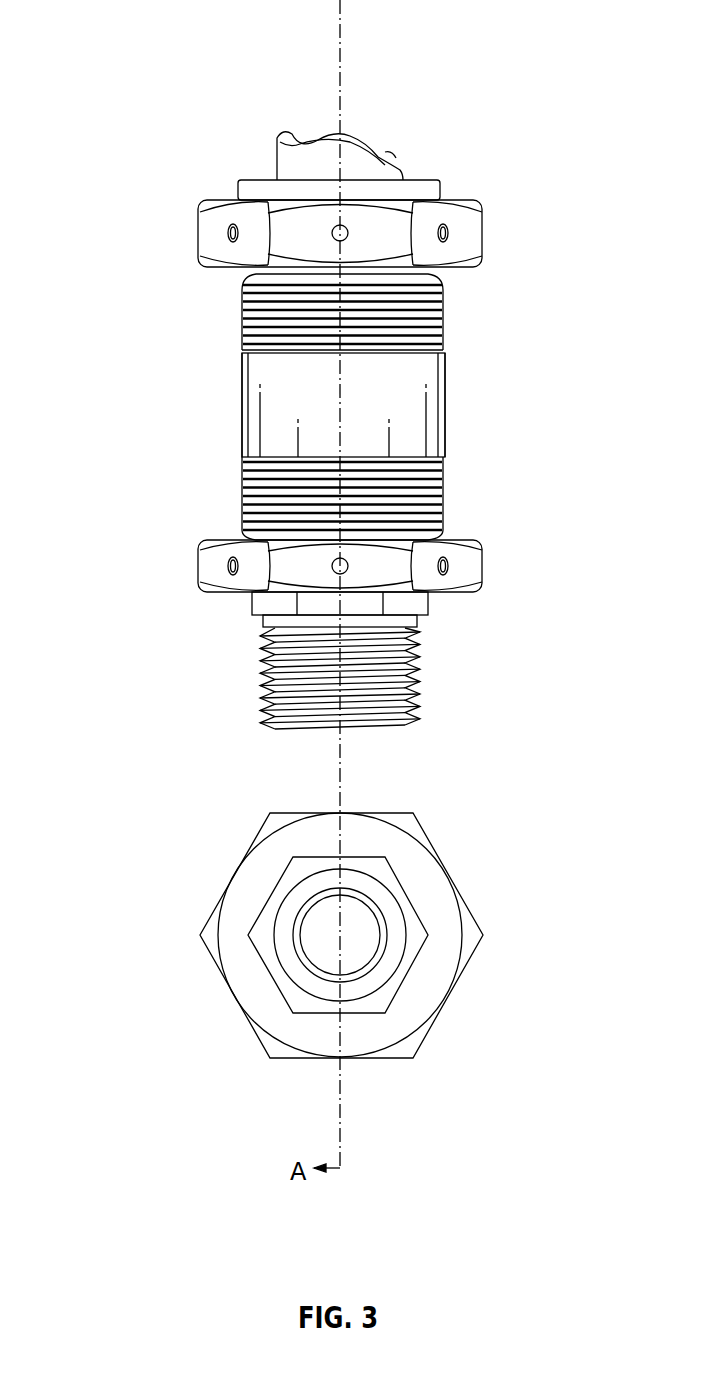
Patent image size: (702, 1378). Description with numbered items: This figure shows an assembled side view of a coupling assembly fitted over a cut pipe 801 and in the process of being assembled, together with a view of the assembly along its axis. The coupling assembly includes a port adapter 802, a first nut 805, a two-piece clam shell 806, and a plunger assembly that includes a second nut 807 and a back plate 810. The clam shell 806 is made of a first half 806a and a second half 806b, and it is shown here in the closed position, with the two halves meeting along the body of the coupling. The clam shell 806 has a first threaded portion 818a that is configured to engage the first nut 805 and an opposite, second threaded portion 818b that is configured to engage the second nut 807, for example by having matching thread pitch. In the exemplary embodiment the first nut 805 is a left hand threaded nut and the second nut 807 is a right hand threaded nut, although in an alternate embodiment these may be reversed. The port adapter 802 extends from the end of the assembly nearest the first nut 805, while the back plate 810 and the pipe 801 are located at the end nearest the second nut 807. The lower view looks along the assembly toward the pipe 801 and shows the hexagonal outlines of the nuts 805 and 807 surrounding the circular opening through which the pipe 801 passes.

The cut pipe 801 is at (372, 138).
The port adapter 802 is at (412, 677).
The first nut 805 is at (470, 567).
The two-piece clam shell 806 is at (414, 386).
The first half 806a is at (445, 418).
The second half 806b is at (243, 418).
The second nut 807 is at (474, 194).
The back plate 810 is at (258, 173).
The first threaded portion 818a is at (246, 479).
The second threaded portion 818b is at (246, 299).